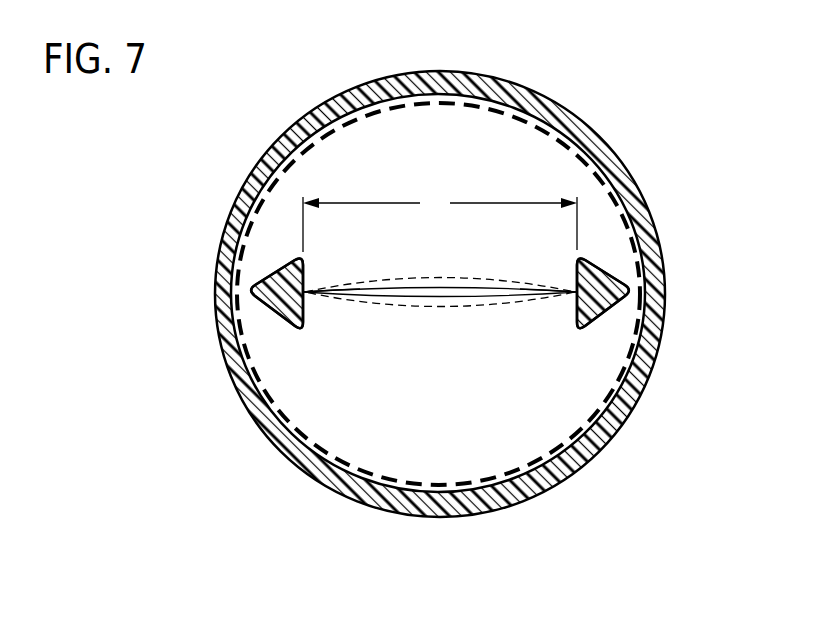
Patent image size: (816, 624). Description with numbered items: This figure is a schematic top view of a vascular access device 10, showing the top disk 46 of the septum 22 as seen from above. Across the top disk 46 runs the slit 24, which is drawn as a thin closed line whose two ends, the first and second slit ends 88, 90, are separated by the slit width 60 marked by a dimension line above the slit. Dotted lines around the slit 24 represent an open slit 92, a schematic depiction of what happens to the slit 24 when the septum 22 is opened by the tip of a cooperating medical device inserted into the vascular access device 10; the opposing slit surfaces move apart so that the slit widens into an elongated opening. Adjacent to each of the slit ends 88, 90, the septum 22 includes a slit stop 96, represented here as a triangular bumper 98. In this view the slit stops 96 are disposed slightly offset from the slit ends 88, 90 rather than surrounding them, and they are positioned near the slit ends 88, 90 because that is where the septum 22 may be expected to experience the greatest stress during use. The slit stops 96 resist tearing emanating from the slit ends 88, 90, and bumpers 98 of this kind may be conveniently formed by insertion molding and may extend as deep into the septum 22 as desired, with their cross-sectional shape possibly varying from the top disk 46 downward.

The vascular access device 10 is at (195, 157).
The septum 22 is at (533, 175).
The slit 24 is at (430, 294).
The top disk 46 is at (552, 395).
The slit width 60 is at (440, 222).
The first slit end 88 is at (305, 305).
The second slit end 90 is at (575, 305).
The open slit 92 is at (395, 280).
The slit stop 96 is at (258, 312).
The triangular bumper 98 is at (268, 272).